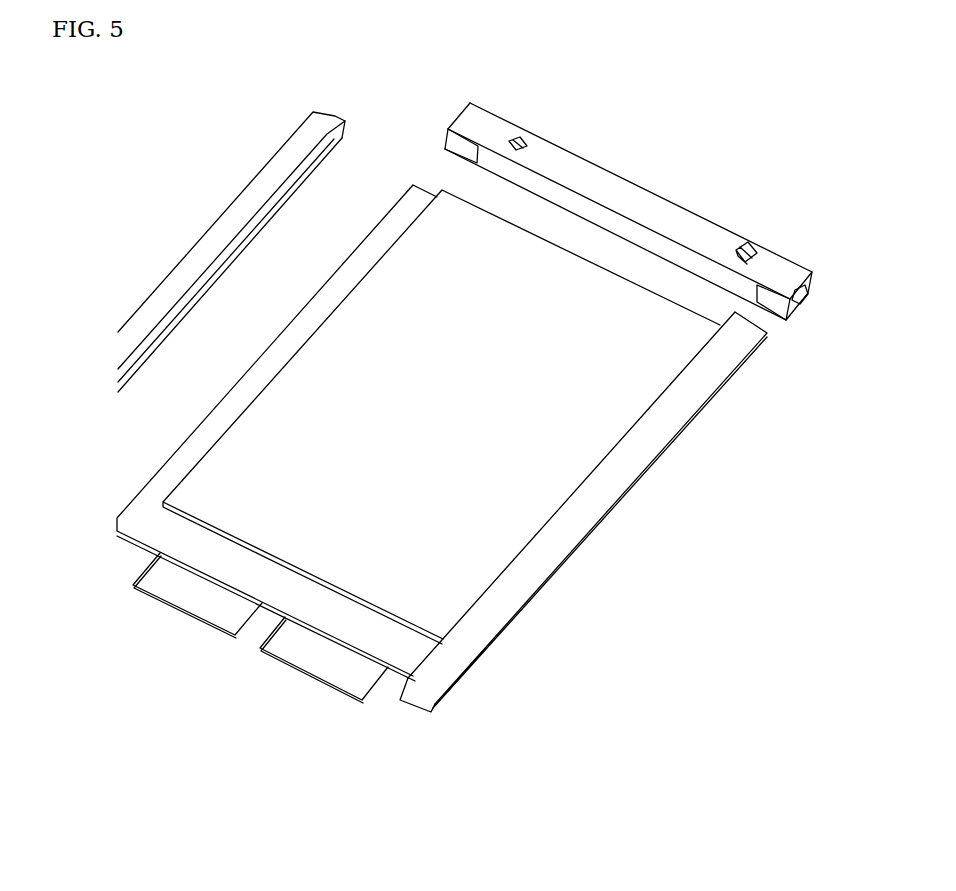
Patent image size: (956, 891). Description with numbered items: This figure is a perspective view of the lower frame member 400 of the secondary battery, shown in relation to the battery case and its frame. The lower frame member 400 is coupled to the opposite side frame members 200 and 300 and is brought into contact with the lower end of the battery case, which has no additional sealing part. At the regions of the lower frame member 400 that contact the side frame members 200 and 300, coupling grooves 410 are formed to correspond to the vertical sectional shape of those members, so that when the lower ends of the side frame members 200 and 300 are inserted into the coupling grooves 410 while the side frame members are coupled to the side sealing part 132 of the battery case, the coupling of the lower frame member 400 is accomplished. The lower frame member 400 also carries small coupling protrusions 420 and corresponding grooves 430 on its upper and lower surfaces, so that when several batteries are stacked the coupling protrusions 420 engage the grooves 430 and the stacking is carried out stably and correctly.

The side sealing part 132 is at (143, 493).
The side frame member 200 is at (225, 222).
The side frame member 300 is at (598, 507).
The lower frame member 400 is at (648, 178).
The coupling groove 410 is at (790, 303).
The coupling protrusion 420 is at (748, 245).
The groove 430 is at (518, 138).